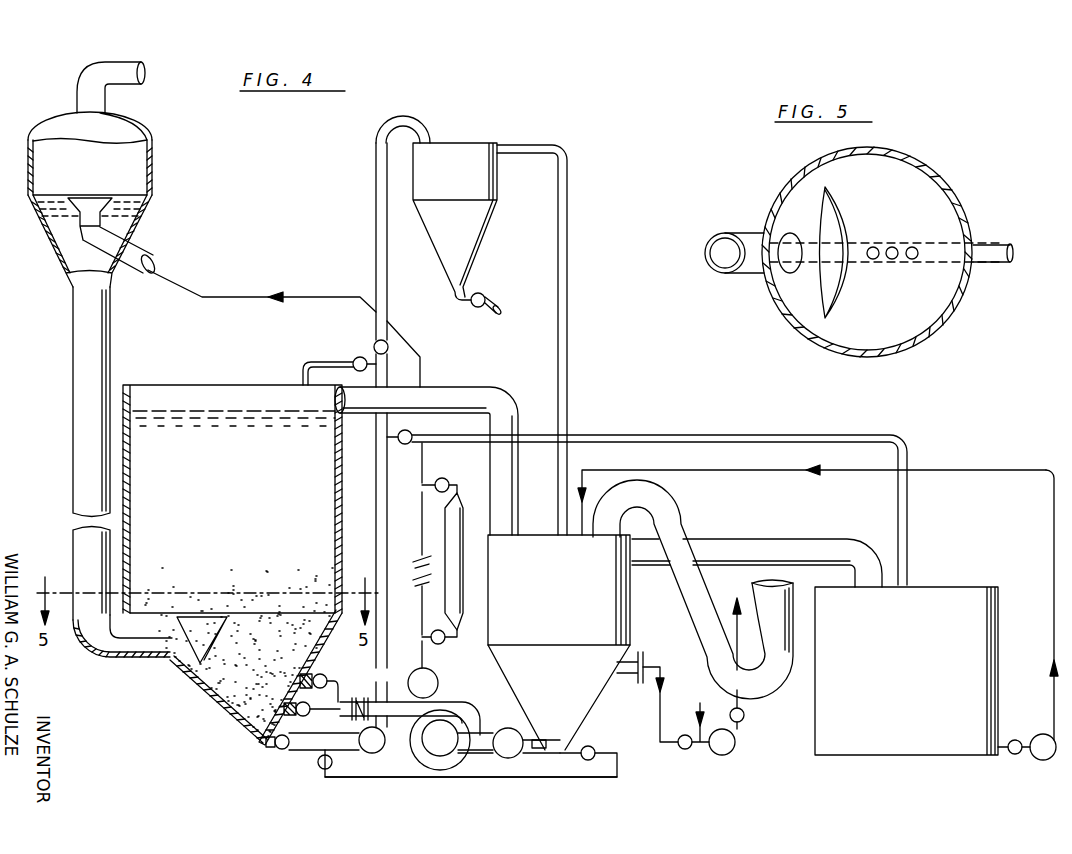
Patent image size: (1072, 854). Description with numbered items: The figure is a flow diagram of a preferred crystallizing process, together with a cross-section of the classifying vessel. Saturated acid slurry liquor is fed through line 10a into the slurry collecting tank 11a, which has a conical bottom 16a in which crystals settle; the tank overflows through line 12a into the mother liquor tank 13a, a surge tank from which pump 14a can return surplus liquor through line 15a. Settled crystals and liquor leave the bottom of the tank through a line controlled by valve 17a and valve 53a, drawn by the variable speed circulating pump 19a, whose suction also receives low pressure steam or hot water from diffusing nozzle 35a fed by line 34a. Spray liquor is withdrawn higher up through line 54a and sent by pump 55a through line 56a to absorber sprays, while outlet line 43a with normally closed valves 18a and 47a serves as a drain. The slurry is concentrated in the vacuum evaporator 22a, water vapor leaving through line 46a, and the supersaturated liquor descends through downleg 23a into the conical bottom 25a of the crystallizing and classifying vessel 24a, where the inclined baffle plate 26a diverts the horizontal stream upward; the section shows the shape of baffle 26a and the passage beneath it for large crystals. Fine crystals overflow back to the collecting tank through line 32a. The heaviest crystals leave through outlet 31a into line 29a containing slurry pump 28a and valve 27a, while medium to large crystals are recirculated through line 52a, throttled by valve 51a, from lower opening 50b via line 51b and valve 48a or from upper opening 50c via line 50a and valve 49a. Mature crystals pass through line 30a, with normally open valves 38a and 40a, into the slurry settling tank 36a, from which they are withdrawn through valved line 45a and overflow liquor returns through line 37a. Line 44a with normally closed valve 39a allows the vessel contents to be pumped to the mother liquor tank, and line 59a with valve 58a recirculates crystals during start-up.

In FIG. 4, the water vapor line 46a is at (81, 87).
In FIG. 4, the vacuum evaporator 22a is at (152, 173).
In FIG. 4, the slurry line 30a is at (376, 217).
In FIG. 4, the slurry settling tank 36a is at (494, 197).
In FIG. 4, the overflow line 37a is at (568, 222).
In FIG. 4, the valved line 45a is at (488, 297).
In FIG. 4, the valve 40a is at (375, 342).
In FIG. 4, the line 59a is at (303, 367).
In FIG. 4, the valve 58a is at (346, 356).
In FIG. 4, the overflow line 32a is at (452, 388).
In FIG. 4, the valve 39a is at (412, 442).
In FIG. 4, the line 44a is at (692, 436).
In FIG. 4, the crystallizing and classifying vessel 24a is at (334, 509).
In FIG. 4, the valve 53a is at (418, 567).
In FIG. 4, the inlet line 10a is at (690, 530).
In FIG. 4, the overflow line 12a is at (795, 541).
In FIG. 4, the mother liquor tank 13a is at (922, 597).
In FIG. 4, the slurry collecting tank 11a is at (615, 635).
In FIG. 4, the valve 49a is at (308, 663).
In FIG. 4, the line 50a is at (311, 676).
In FIG. 5, the line 50a is at (978, 247).
In FIG. 4, the valve 51a is at (358, 700).
In FIG. 4, the valve 38a is at (424, 668).
In FIG. 4, the variable speed circulating pump 19a is at (440, 722).
In FIG. 4, the recirculation line 52a is at (470, 698).
In FIG. 4, the valve 17a is at (505, 728).
In FIG. 4, the conical bottom 16a is at (593, 705).
In FIG. 4, the valve 18a is at (596, 751).
In FIG. 4, the conical bottom 25a is at (220, 713).
In FIG. 4, the outlet 31a is at (273, 748).
In FIG. 5, the outlet 31a is at (872, 246).
In FIG. 4, the valve 27a is at (285, 749).
In FIG. 4, the valve 48a is at (302, 716).
In FIG. 4, the slurry outlet line 29a is at (345, 750).
In FIG. 5, the slurry outlet line 29a is at (1005, 260).
In FIG. 4, the valve 47a is at (324, 770).
In FIG. 4, the slurry pump 28a is at (377, 754).
In FIG. 4, the outlet line 43a is at (497, 778).
In FIG. 4, the steam supply line 34a is at (558, 762).
In FIG. 4, the diffusing nozzle 35a is at (537, 749).
In FIG. 4, the spray liquor withdrawal line 54a is at (658, 736).
In FIG. 4, the pump 55a is at (716, 750).
In FIG. 4, the spray supply line 56a is at (743, 727).
In FIG. 4, the return line 15a is at (1054, 698).
In FIG. 4, the pump 14a is at (1042, 755).
In FIG. 5, the downleg 23a is at (738, 277).
In FIG. 5, the inclined deflector or baffle plate 26a is at (822, 262).
In FIG. 5, the line 51b is at (900, 247).
In FIG. 5, the upper opening 50c is at (913, 247).
In FIG. 5, the lower opening 50b is at (892, 260).